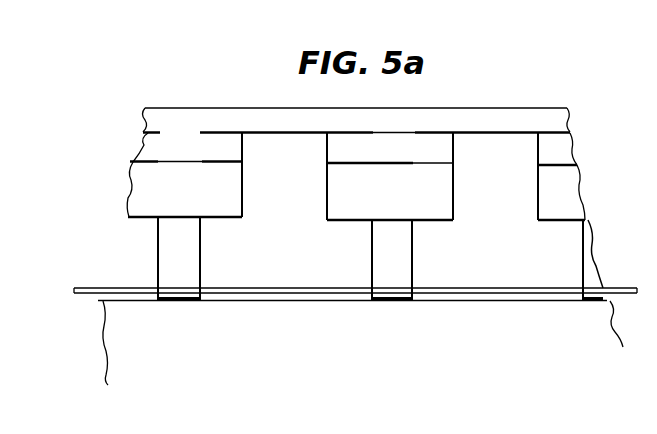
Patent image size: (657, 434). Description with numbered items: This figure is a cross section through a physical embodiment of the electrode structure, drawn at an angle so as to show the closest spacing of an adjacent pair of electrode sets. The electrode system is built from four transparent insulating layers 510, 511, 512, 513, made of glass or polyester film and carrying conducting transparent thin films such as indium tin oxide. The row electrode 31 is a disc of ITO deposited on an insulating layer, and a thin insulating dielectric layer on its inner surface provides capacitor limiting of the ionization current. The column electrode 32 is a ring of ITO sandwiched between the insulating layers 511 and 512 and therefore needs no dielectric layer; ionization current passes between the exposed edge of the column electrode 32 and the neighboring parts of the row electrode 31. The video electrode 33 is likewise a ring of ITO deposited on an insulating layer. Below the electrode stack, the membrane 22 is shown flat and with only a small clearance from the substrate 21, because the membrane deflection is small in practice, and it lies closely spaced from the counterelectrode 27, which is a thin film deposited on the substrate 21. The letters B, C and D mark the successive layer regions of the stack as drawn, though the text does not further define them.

The row electrode 31 is at (251, 125).
The column electrode 32 is at (232, 166).
The video electrode 33 is at (231, 224).
The insulating layer 510 is at (483, 128).
The insulating layer 511 is at (455, 153).
The insulating layer 512 is at (462, 206).
The insulating layer 513 is at (413, 250).
The membrane 22 is at (75, 288).
The counterelectrode 27 is at (88, 304).
The substrate 21 is at (96, 353).
The layer B is at (112, 211).
The layer C is at (123, 155).
The layer D is at (130, 126).